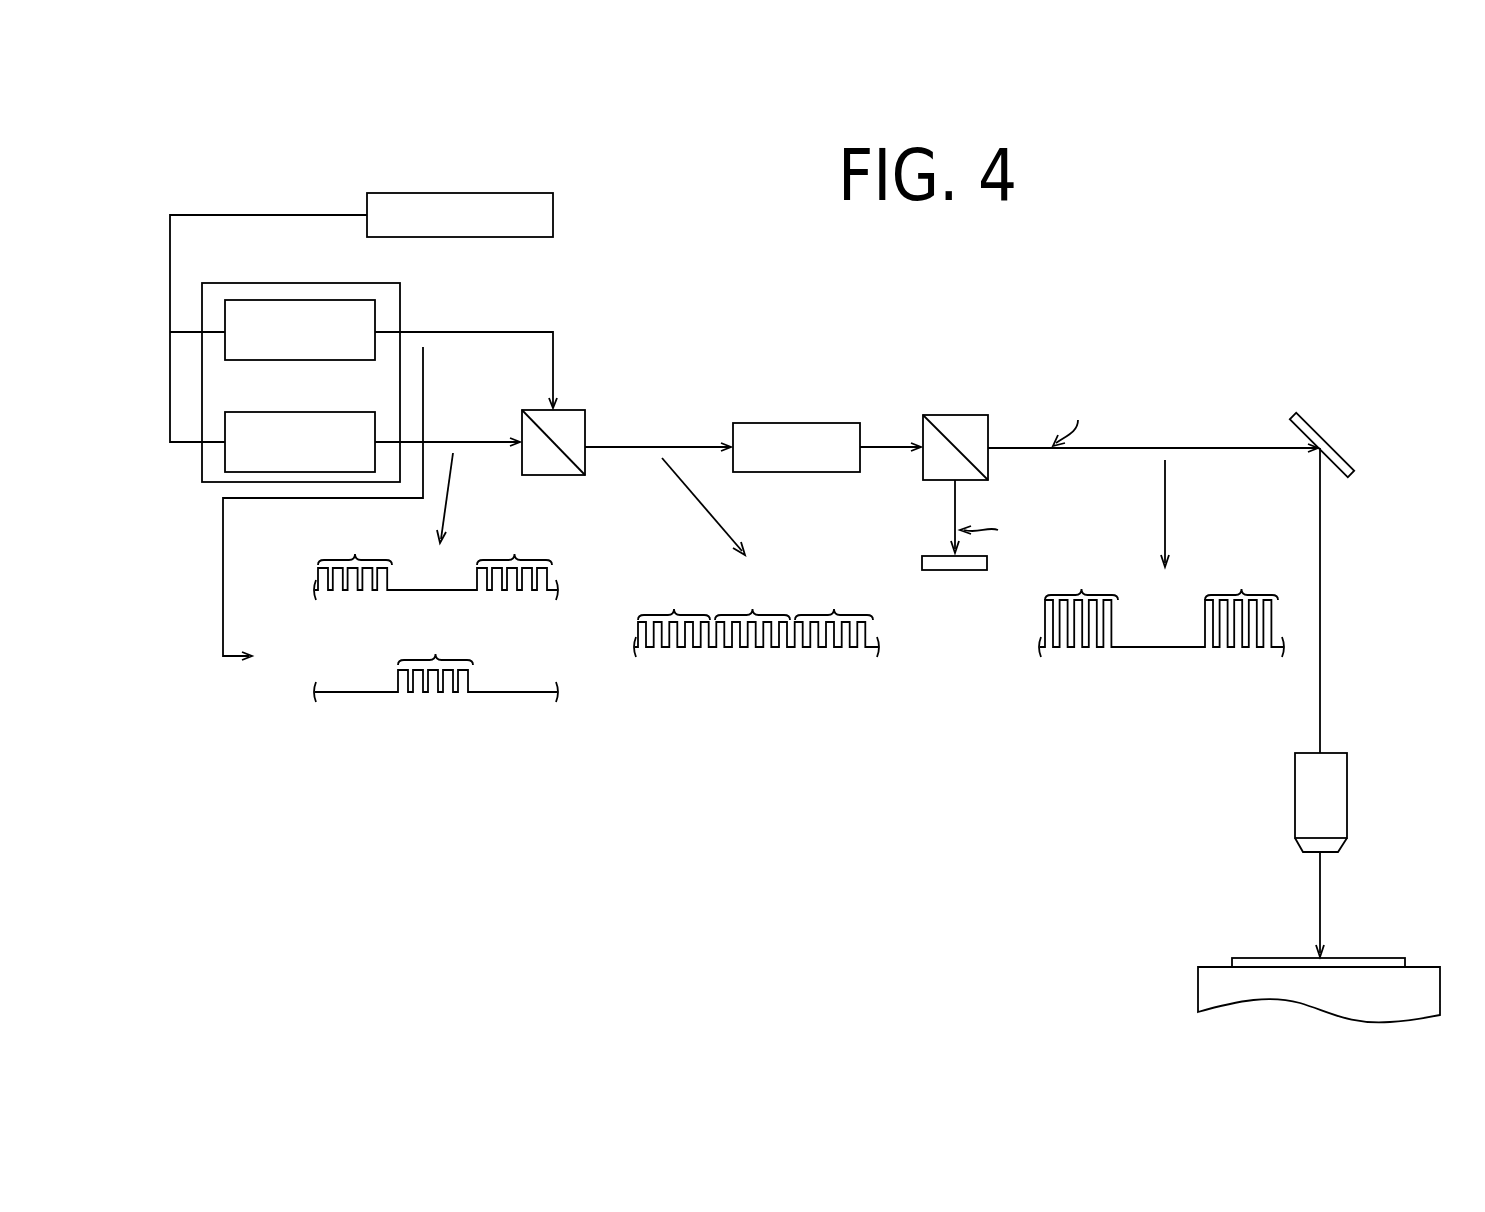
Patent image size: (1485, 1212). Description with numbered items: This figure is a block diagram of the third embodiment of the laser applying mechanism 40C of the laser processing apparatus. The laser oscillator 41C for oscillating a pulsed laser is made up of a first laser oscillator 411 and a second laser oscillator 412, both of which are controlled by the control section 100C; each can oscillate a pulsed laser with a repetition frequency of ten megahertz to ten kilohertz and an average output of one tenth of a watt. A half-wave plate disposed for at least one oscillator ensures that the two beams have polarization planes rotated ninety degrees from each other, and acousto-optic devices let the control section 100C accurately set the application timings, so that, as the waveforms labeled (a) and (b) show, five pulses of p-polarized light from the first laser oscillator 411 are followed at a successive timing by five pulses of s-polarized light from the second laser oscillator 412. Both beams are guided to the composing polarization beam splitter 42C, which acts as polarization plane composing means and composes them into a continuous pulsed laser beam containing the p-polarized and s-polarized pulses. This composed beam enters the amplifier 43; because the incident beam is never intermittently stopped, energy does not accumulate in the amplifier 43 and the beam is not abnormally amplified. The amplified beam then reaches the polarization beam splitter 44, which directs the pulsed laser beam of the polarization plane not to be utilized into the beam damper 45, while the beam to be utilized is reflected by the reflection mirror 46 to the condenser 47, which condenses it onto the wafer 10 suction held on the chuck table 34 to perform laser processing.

The laser applying mechanism 40C is at (185, 188).
The control section 100C is at (423, 193).
The laser oscillator 41C is at (262, 283).
The second laser oscillator 412 is at (292, 300).
The first laser oscillator 411 is at (285, 412).
The composing polarization beam splitter 42C is at (590, 389).
The amplifier 43 is at (790, 423).
The polarization beam splitter 44 is at (970, 415).
The beam damper 45 is at (937, 556).
The reflection mirror 46 is at (1308, 422).
The condenser 47 is at (1327, 814).
The wafer 10 is at (1360, 958).
The chuck table 34 is at (1192, 995).